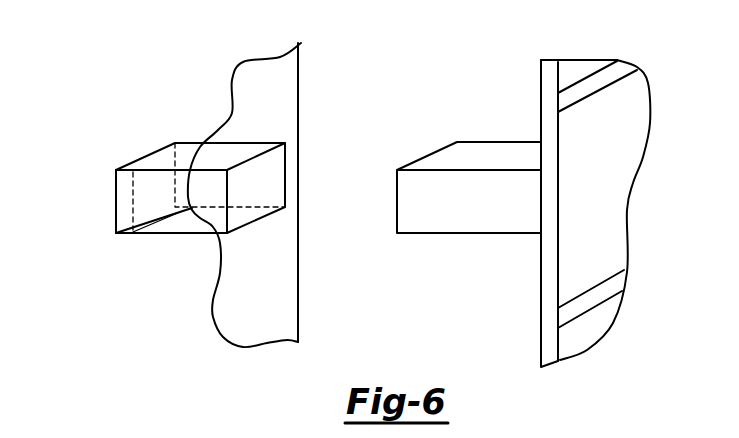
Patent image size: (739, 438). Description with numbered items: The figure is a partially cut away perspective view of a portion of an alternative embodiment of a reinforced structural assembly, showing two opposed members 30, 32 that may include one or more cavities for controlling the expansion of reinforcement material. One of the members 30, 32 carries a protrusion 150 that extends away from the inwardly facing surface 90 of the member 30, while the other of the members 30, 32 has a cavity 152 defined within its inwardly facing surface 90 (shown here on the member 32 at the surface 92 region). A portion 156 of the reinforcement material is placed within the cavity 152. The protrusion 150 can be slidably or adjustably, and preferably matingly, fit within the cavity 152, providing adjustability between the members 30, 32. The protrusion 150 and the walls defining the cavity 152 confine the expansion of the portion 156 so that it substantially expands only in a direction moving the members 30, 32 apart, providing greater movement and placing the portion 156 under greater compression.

The member 32 is at (322, 82).
The mounting surface of panel 32 92 is at (298, 318).
The portion of reinforcement material 156 is at (122, 199).
The cavity 152 is at (186, 223).
The member 30 is at (507, 116).
The inwardly facing surface 90 is at (541, 275).
The protrusion 150 is at (412, 215).